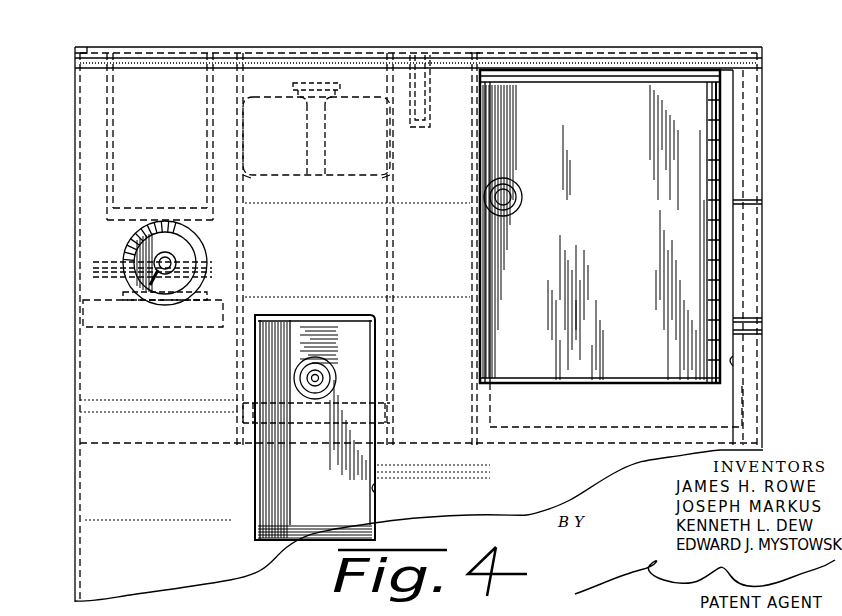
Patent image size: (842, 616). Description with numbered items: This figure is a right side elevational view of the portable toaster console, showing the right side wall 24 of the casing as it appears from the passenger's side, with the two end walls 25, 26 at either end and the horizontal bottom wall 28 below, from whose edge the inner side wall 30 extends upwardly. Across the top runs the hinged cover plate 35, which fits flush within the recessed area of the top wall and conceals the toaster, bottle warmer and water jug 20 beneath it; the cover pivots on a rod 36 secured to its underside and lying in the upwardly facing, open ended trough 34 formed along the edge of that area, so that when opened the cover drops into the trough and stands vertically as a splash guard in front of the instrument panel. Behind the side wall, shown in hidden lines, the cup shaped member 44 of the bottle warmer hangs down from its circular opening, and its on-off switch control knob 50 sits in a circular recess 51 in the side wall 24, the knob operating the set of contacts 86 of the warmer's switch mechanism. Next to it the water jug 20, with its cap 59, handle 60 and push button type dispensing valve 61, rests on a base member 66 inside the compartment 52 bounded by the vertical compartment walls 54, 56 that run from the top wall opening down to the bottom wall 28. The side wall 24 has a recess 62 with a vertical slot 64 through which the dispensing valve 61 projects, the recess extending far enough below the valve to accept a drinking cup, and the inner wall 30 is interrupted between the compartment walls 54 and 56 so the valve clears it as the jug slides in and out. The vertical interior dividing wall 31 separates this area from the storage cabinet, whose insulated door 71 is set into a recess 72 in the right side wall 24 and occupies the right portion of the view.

The water jug 20 is at (323, 340).
The right side wall 24 is at (133, 350).
The end wall 25 is at (763, 268).
The end wall 26 is at (75, 215).
The bottom wall 28 is at (120, 445).
The inner side wall 30 is at (222, 7).
The interior dividing wall 31 is at (477, 410).
The trough 34 is at (473, 53).
The hinged cover plate 35 is at (183, 47).
The rod 36 is at (420, 103).
The cup shaped member 44 is at (107, 133).
The on-off switch control knob 50 is at (85, 0).
The circular recess 51 is at (278, 231).
The compartment 52 is at (392, 72).
The compartment wall 54 is at (240, 89).
The compartment wall 56 is at (395, 193).
The cap 59 is at (330, 82).
The handle 60 is at (322, 150).
The push button type dispensing valve 61 is at (413, 378).
The recess 62 is at (375, 490).
The vertical slot 64 is at (338, 358).
The base member 66 is at (240, 413).
The door 71 is at (688, 147).
The recess 72 is at (737, 363).
The contacts 86 is at (205, 288).